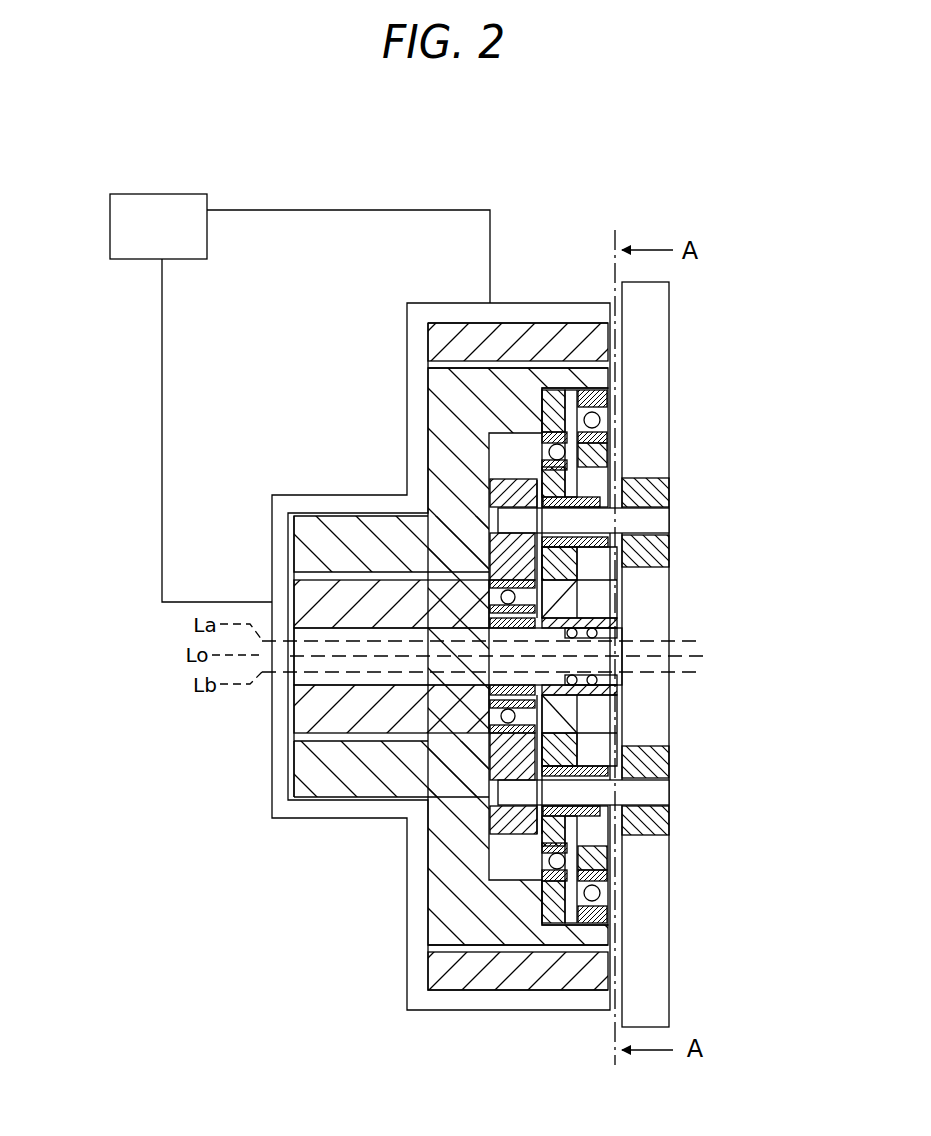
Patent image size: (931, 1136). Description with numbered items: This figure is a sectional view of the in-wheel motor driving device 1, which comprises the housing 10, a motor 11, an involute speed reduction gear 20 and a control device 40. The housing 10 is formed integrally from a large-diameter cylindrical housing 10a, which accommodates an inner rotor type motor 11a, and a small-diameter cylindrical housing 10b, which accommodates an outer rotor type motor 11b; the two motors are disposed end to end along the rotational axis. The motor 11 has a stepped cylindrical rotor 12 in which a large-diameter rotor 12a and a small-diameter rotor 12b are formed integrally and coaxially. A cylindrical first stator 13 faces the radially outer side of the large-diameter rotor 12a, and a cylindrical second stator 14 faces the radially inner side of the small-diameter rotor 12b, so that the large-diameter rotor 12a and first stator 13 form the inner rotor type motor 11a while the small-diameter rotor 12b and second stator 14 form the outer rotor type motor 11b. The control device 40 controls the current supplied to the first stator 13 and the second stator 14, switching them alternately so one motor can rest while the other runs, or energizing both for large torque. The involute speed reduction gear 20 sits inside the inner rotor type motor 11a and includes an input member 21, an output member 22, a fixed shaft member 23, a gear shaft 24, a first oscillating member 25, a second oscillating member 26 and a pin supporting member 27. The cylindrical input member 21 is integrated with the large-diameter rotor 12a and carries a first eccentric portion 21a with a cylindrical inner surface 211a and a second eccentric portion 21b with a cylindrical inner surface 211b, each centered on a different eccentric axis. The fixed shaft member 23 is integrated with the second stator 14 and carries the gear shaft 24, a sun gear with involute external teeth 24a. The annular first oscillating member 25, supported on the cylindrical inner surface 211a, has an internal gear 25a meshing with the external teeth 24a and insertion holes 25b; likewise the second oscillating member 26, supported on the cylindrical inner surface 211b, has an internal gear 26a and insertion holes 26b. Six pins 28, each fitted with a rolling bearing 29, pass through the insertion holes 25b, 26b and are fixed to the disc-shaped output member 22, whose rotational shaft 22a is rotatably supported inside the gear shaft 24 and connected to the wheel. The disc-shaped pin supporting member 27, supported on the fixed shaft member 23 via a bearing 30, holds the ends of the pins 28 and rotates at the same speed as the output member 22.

The in-wheel motor driving device 1 is at (722, 245).
The housing 10 is at (404, 620).
The large-diameter cylindrical housing 10a is at (478, 302).
The small-diameter cylindrical housing 10b is at (293, 505).
The motor 11 is at (362, 262).
The inner rotor type motor 11a is at (380, 340).
The outer rotor type motor 11b is at (316, 386).
The rotor 12 is at (403, 622).
The large-diameter rotor 12a is at (510, 380).
The small-diameter rotor 12b is at (362, 533).
The first stator 13 is at (462, 333).
The second stator 14 is at (312, 603).
The involute speed reduction gear 20 is at (675, 654).
The input member 21 is at (663, 608).
The first eccentric portion 21a is at (600, 380).
The second eccentric portion 21b is at (600, 345).
The output member 22 is at (648, 448).
The rotational shaft 22a is at (612, 655).
The fixed shaft member 23 is at (545, 584).
The gear shaft 24 is at (600, 598).
The external teeth 24a is at (600, 702).
The first oscillating member 25 is at (600, 455).
The internal gear 25a is at (612, 605).
The insertion holes 25b is at (600, 742).
The second oscillating member 26 is at (415, 686).
The internal gear 26a is at (505, 719).
The insertion holes 26b is at (553, 830).
The pin supporting member 27 is at (440, 402).
The pin 28 is at (655, 520).
The rolling bearing 29 is at (645, 492).
The bearing 30 is at (310, 718).
The control device 40 is at (140, 262).
The cylindrical inner surface 211a is at (610, 855).
The cylindrical inner surface 211b is at (610, 887).